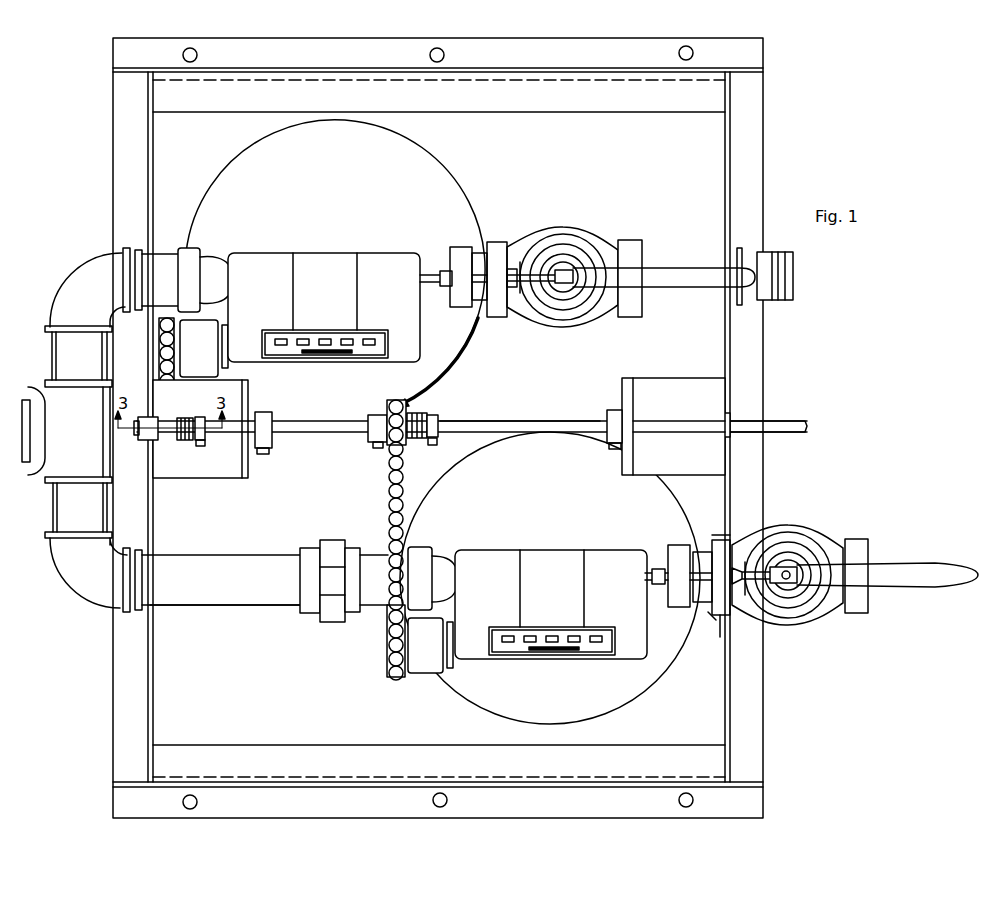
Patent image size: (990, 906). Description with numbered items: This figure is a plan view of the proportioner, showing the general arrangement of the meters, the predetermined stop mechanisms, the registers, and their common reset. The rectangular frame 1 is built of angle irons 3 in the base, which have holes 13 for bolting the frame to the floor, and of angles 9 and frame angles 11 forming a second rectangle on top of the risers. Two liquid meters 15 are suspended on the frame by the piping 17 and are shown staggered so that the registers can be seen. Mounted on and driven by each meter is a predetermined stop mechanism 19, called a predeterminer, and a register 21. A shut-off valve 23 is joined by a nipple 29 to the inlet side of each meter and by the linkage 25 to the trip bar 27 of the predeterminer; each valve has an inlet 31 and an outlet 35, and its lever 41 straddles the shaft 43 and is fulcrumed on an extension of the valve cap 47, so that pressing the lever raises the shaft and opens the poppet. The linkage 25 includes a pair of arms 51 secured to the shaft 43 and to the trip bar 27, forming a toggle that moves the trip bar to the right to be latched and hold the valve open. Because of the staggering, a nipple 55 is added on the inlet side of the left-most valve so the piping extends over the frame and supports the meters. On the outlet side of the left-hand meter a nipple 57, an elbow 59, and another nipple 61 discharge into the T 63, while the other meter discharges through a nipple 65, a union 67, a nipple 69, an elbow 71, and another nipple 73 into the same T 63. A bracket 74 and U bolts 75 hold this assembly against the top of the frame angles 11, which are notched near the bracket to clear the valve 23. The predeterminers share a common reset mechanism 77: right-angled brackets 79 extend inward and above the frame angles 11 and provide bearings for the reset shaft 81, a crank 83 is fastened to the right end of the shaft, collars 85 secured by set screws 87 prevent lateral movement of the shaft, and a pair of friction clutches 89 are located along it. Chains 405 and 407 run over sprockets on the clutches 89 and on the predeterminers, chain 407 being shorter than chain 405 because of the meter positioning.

The rectangular frame 1 is at (763, 740).
The angle irons 3 is at (763, 50).
The angles 9 is at (487, 112).
The frame angles 11 is at (153, 160).
The holes 13 is at (197, 55).
The liquid meters 15 is at (437, 180).
The piping 17 is at (250, 608).
The predetermined stop mechanism 19 is at (210, 322).
The register 21 is at (343, 258).
The shut-off valve 23 is at (604, 232).
The linkage 25 is at (505, 248).
The trip bar 27 is at (456, 308).
The nipple 29 is at (478, 250).
The inlet 31 is at (642, 246).
The outlet 35 is at (475, 309).
The lever 41 is at (666, 287).
The shaft 43 is at (575, 277).
The valve cap 47 is at (576, 238).
The arms 51 is at (516, 311).
The nipple 55 is at (782, 300).
The nipple 57 is at (162, 256).
The elbow 59 is at (66, 288).
The nipple 61 is at (52, 348).
The T 63 is at (22, 400).
The nipple 65 is at (378, 611).
The union 67 is at (328, 540).
The nipple 69 is at (232, 562).
The elbow 71 is at (112, 550).
The nipple 73 is at (97, 498).
The bracket 74 is at (722, 538).
The U bolts 75 is at (130, 248).
The reset mechanism 77 is at (483, 420).
The right-angled brackets 79 is at (250, 386).
The reset shaft 81 is at (318, 434).
The crank 83 is at (790, 419).
The collars 85 is at (274, 418).
The set screws 87 is at (266, 455).
The friction clutches 89 is at (178, 414).
The chain 405 is at (389, 486).
The chain 407 is at (159, 353).